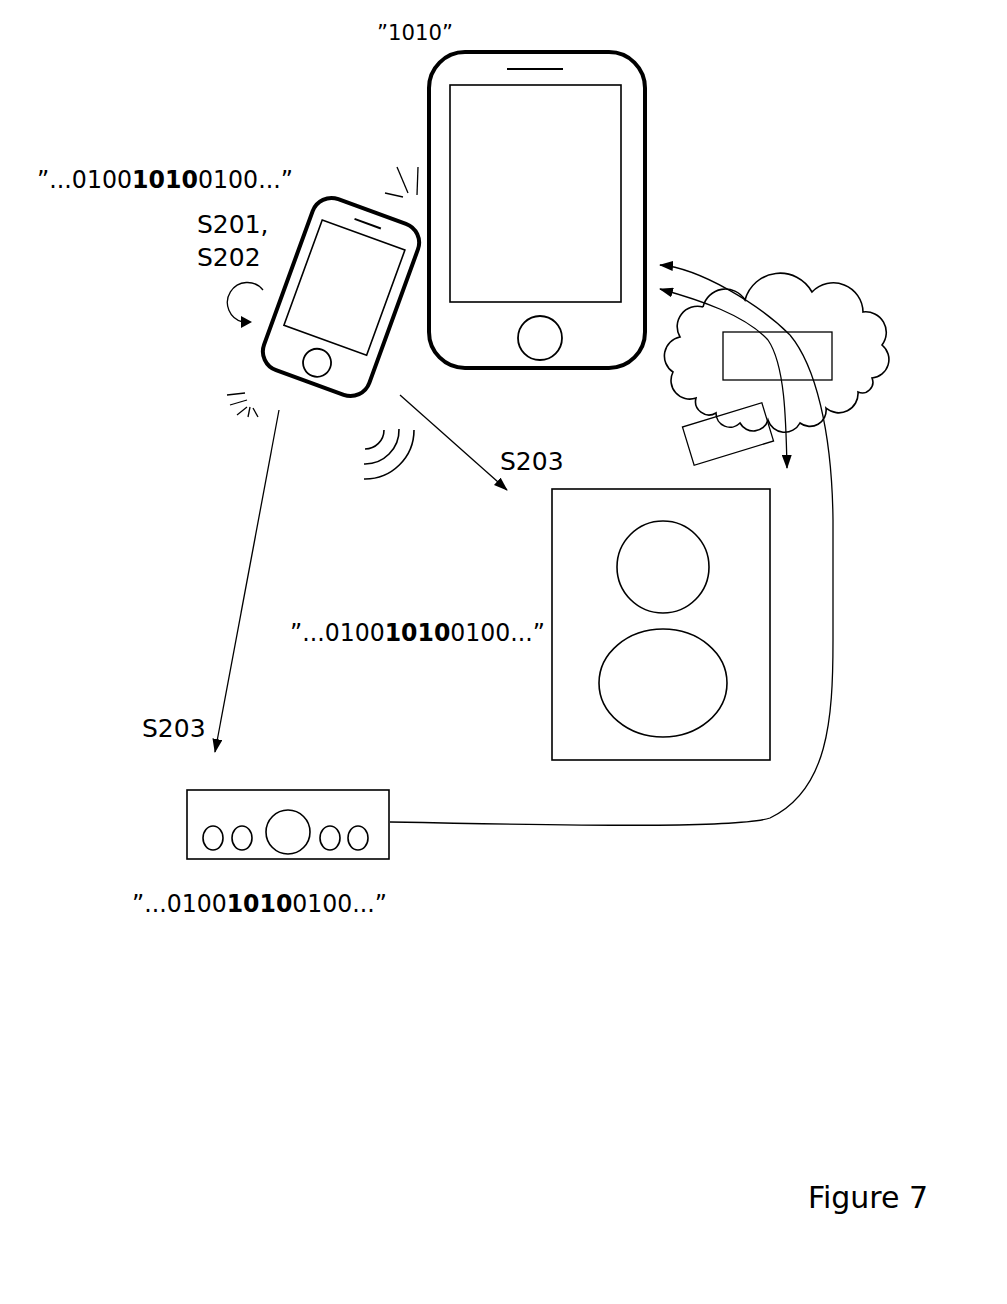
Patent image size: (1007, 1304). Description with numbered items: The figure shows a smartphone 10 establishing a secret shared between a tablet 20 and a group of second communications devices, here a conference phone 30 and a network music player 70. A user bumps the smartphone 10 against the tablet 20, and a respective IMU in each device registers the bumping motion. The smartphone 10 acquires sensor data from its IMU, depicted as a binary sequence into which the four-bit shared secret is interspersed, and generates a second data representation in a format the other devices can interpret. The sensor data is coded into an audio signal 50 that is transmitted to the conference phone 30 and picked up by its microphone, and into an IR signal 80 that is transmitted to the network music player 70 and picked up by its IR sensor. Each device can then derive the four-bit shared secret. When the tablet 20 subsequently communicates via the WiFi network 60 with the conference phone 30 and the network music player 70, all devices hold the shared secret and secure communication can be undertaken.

The smartphone 10 is at (343, 184).
The tablet 20 is at (527, 50).
The conference phone 30 is at (645, 489).
The audio signal 50 is at (375, 485).
The WiFi network 60 is at (771, 294).
The network music player 70 is at (345, 790).
The IR signal 80 is at (227, 418).